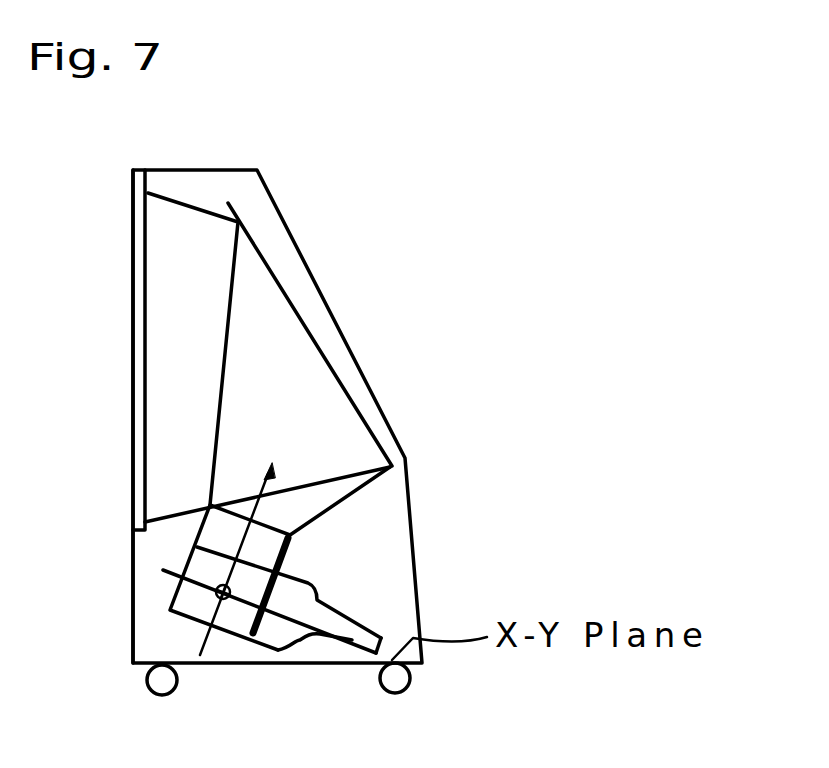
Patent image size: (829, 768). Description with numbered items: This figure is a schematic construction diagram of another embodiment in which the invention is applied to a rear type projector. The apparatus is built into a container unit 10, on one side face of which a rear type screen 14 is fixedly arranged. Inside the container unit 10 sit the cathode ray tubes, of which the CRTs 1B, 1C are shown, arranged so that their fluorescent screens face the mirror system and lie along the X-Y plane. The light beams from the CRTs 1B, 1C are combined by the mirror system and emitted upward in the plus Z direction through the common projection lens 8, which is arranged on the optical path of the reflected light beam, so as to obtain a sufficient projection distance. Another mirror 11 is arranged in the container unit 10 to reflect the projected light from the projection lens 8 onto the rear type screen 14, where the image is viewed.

The container unit 10 is at (405, 458).
The mirror 11 is at (283, 293).
The rear type screen 14 is at (145, 309).
The common projection lens 8 is at (321, 589).
The CRT 1B is at (237, 620).
The CRT 1C is at (352, 642).